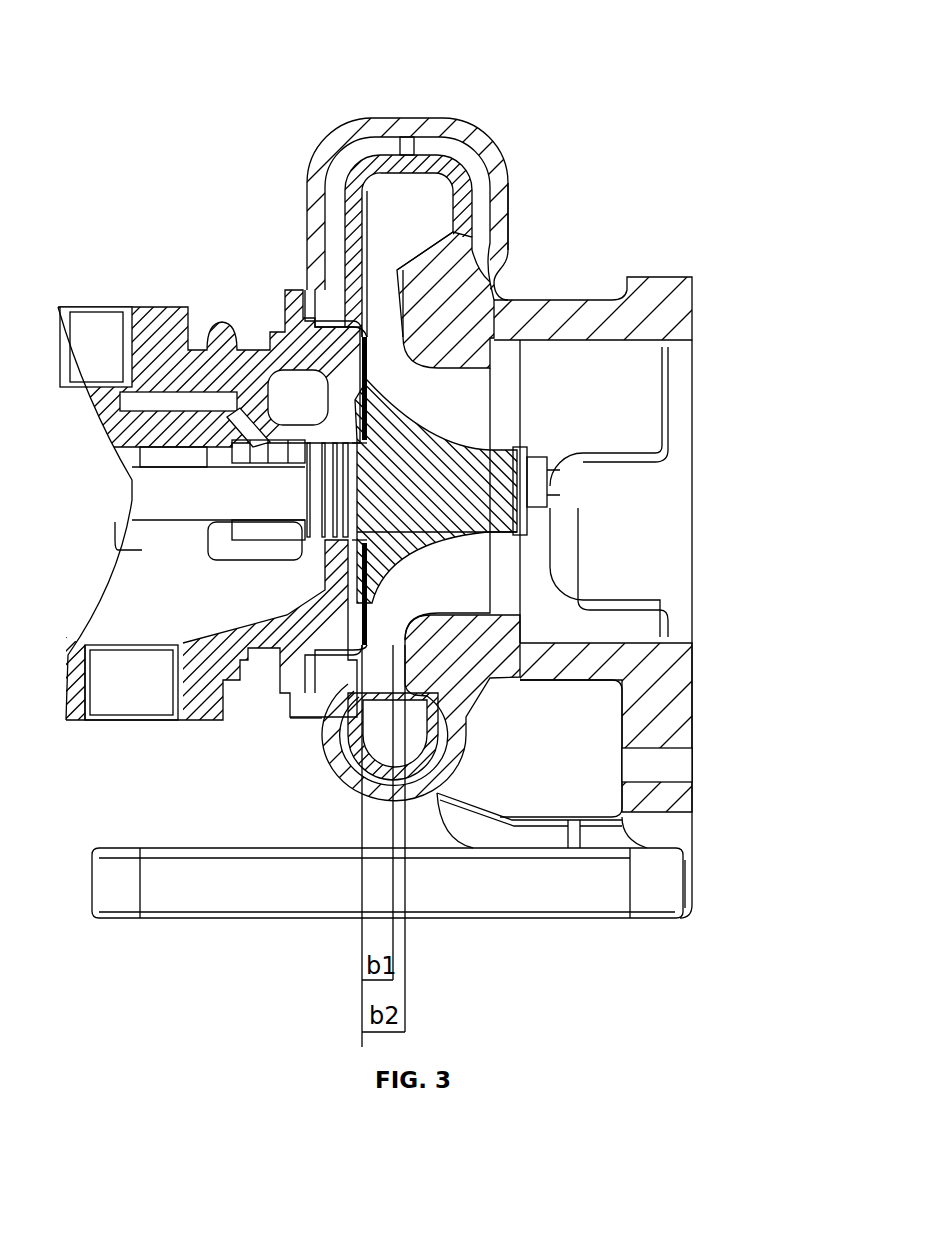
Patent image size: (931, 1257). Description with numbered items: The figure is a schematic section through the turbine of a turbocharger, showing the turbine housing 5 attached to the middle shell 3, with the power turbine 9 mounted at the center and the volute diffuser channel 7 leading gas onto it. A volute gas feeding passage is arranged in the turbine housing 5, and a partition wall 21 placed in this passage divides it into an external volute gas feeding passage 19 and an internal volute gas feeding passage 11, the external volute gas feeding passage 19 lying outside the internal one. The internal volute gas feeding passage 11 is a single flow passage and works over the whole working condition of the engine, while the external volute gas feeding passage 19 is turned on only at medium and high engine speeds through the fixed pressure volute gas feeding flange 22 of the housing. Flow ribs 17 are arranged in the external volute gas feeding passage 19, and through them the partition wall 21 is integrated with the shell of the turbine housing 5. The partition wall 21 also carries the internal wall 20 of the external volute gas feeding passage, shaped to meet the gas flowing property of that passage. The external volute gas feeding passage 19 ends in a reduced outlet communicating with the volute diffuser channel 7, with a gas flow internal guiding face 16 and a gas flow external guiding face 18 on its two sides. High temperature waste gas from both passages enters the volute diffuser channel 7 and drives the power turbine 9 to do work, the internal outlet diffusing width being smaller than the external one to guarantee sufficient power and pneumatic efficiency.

The middle shell 3 is at (162, 355).
The turbine housing 5 is at (490, 328).
The volute diffuser channel 7 is at (378, 325).
The power turbine 9 is at (355, 400).
The internal volute gas feeding passage 11 is at (422, 226).
The gas flow internal guiding face 16 is at (360, 276).
The flow ribs 17 is at (406, 146).
The gas flow external guiding face 18 is at (368, 282).
The external volute gas feeding passage 19 is at (480, 220).
The internal wall of external volute gas feeding passage 20 is at (400, 283).
The partition wall 21 is at (433, 740).
The fixed pressure volute gas feeding flange 22 is at (572, 898).